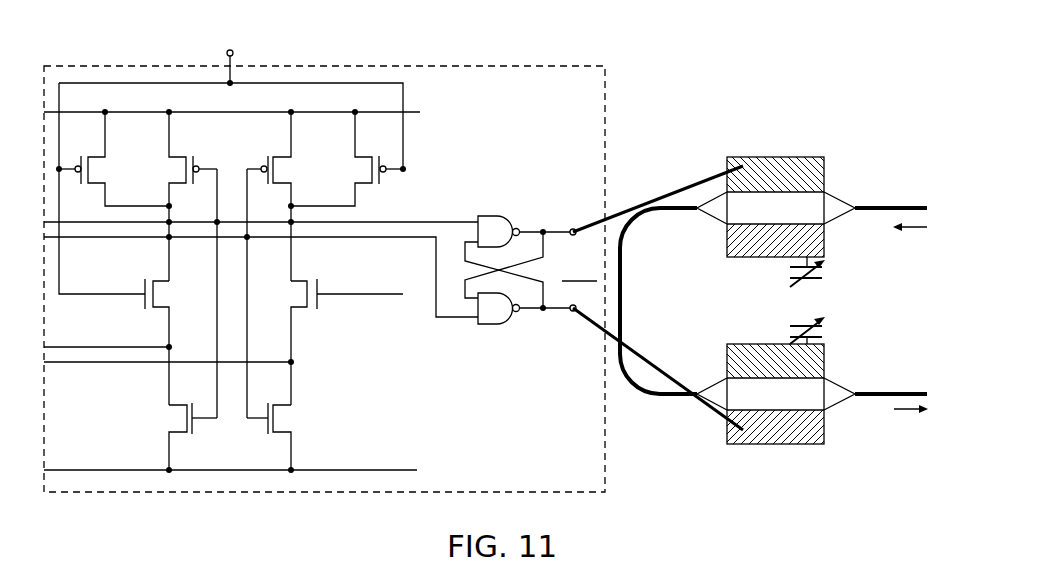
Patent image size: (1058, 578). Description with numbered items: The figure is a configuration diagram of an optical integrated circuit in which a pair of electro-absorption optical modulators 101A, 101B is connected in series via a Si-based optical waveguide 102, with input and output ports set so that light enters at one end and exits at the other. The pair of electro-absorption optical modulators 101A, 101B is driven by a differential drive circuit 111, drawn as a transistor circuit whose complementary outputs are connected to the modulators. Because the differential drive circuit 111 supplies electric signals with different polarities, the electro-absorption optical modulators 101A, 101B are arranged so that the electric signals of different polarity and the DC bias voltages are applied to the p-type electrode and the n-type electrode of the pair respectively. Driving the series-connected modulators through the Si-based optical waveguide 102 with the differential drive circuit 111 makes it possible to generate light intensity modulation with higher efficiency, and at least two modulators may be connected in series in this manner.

The differential drive circuit 111 is at (578, 59).
The electro-absorption optical modulator 101A is at (824, 147).
The electro-absorption optical modulator 101B is at (824, 447).
The Si-based optical waveguide 102 is at (900, 208).